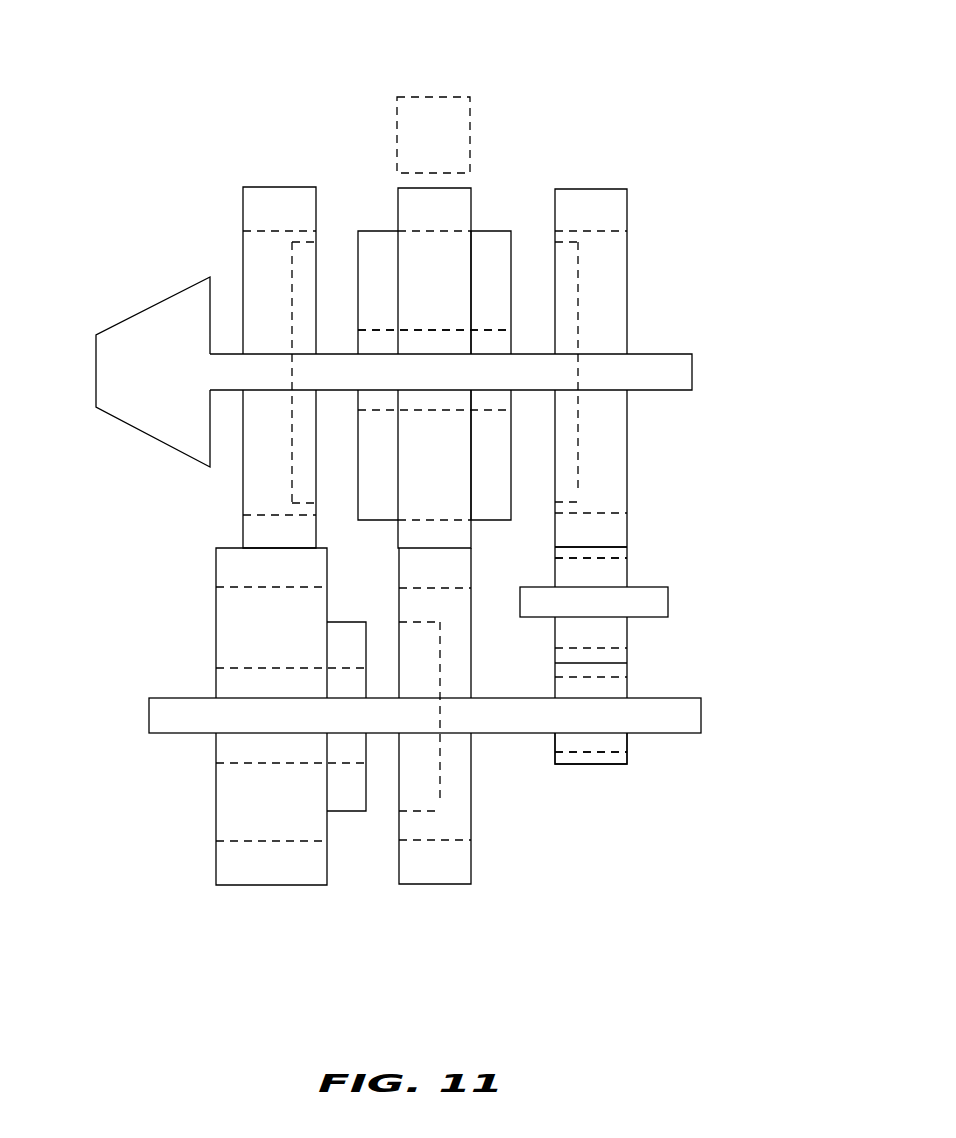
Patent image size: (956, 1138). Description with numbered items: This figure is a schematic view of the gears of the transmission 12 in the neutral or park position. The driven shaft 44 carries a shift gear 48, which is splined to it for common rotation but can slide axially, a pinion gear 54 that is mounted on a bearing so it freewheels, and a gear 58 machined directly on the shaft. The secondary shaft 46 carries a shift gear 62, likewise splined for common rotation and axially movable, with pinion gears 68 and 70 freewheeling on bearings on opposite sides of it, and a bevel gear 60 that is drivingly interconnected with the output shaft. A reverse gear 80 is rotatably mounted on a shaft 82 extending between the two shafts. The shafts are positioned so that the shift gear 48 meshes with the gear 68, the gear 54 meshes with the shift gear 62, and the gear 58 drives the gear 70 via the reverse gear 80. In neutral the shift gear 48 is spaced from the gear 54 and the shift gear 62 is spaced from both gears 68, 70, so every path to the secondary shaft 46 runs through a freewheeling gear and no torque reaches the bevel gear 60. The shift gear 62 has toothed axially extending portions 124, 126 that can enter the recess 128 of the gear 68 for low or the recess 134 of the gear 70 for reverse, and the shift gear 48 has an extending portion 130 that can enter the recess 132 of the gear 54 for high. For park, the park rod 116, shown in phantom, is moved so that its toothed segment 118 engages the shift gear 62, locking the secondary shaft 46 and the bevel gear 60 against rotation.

The transmission assembly 12 is at (482, 134).
The driven shaft 44 is at (148, 717).
The secondary shaft 46 is at (692, 375).
The shift gear 48 is at (248, 865).
The pinion gear 54 is at (430, 822).
The gear 58 is at (597, 759).
The bevel gear 60 is at (143, 312).
The shift gear 62 is at (393, 215).
The pinion gear 68 is at (258, 217).
The pinion gear 70 is at (600, 212).
The reverse gear 80 is at (620, 553).
The shaft 82 is at (668, 600).
The park rod 116 is at (430, 143).
The toothed segment 118 is at (457, 185).
The axially extending portion 124 is at (378, 295).
The axially extending portion 126 is at (487, 287).
The recess 128 is at (290, 297).
The axially extending portion 130 is at (347, 780).
The recess 132 is at (438, 770).
The recess 134 is at (573, 332).